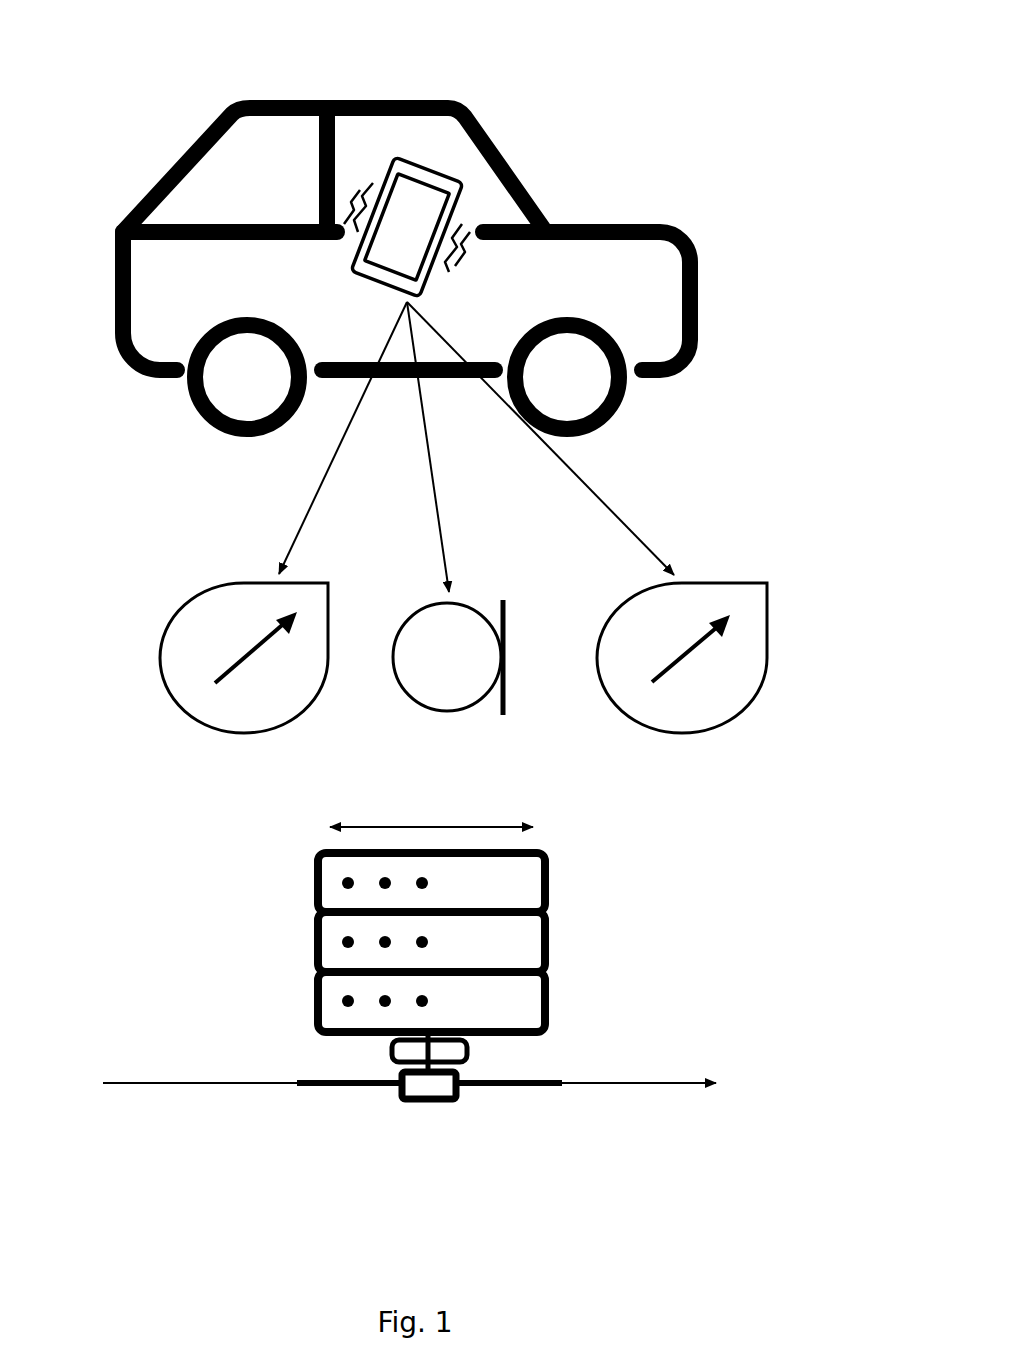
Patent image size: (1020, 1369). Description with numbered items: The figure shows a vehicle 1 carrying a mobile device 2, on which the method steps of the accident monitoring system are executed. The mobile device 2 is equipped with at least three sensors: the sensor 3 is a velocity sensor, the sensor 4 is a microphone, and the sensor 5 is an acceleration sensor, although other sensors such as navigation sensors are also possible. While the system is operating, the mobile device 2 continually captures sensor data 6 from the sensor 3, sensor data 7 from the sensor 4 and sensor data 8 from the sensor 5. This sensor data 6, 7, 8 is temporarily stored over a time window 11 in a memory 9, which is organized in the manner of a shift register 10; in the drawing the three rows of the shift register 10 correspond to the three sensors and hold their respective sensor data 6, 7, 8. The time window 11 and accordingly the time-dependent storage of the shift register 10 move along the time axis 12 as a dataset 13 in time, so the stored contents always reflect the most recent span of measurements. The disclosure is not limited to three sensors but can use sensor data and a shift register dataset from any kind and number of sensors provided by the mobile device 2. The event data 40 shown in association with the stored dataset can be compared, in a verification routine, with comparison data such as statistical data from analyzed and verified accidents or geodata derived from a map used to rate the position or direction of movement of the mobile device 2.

The vehicle 1 is at (537, 182).
The mobile device 2 is at (420, 157).
The velocity sensor 3 is at (186, 604).
The microphone 4 is at (472, 606).
The acceleration sensor 5 is at (703, 582).
The sensor data 6 is at (431, 882).
The sensor data 7 is at (431, 942).
The sensor data 8 is at (431, 1002).
The memory 9 is at (549, 878).
The shift register 10 is at (406, 898).
The time window 11 is at (449, 824).
The time axis 12 is at (282, 1087).
The dataset 13 is at (460, 1100).
The event data 40 is at (470, 1051).